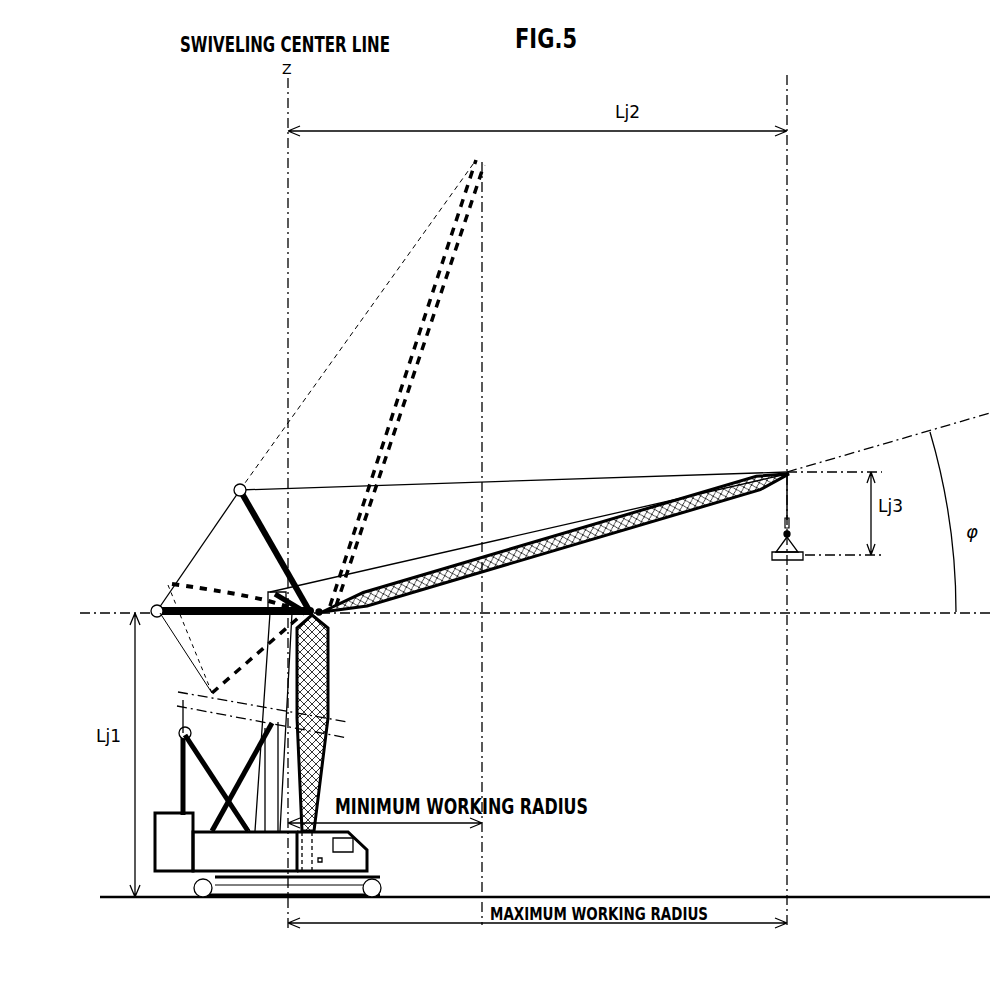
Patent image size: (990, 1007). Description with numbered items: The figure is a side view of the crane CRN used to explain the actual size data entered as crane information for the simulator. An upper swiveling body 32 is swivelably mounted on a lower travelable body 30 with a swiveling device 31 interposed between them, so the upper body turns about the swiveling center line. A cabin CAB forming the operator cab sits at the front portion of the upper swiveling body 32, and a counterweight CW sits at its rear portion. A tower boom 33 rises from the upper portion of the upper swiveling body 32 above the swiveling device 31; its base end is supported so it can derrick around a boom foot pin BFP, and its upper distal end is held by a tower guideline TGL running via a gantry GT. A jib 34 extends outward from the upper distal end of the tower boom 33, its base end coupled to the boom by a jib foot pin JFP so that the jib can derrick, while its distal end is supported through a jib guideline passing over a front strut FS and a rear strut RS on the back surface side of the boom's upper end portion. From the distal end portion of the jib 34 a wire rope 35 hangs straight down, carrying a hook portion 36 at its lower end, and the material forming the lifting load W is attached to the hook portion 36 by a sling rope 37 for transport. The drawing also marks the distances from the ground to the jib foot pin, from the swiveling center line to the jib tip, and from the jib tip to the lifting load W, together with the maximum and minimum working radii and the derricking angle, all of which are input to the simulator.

The lower travelable body 30 is at (270, 897).
The swiveling device 31 is at (252, 885).
The upper swiveling body 32 is at (256, 864).
The tower boom 33 is at (330, 757).
The jib 34 is at (540, 563).
The wire rope 35 is at (795, 497).
The hook portion 36 is at (783, 525).
The sling rope 37 is at (796, 540).
The crane CRN is at (194, 477).
The front strut FS is at (256, 524).
The rear strut RS is at (207, 606).
The tower guideline TGL is at (186, 648).
The jib foot pin JFP is at (330, 617).
The gantry GT is at (183, 770).
The counterweight CW is at (189, 848).
The cabin CAB is at (368, 846).
The boom foot pin BFP is at (322, 862).
The lifting load W is at (772, 556).